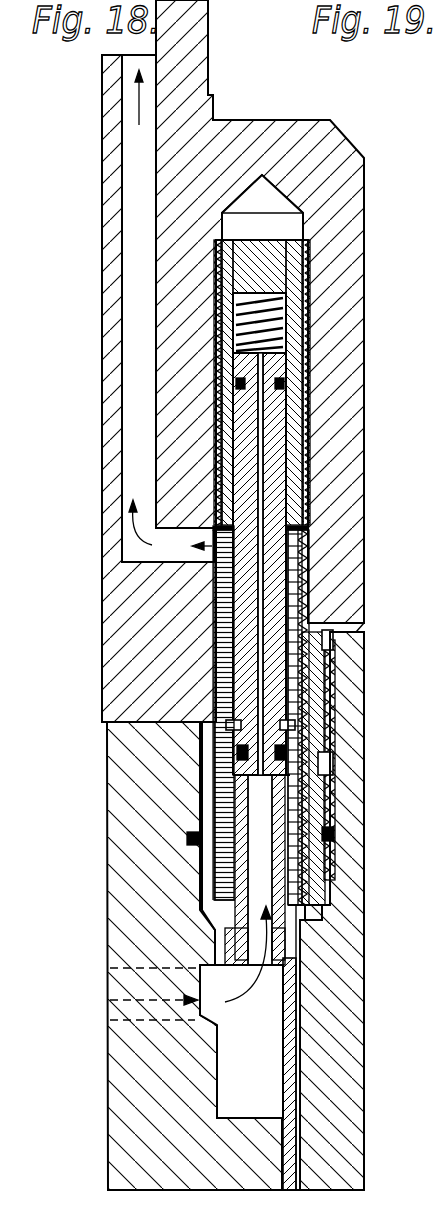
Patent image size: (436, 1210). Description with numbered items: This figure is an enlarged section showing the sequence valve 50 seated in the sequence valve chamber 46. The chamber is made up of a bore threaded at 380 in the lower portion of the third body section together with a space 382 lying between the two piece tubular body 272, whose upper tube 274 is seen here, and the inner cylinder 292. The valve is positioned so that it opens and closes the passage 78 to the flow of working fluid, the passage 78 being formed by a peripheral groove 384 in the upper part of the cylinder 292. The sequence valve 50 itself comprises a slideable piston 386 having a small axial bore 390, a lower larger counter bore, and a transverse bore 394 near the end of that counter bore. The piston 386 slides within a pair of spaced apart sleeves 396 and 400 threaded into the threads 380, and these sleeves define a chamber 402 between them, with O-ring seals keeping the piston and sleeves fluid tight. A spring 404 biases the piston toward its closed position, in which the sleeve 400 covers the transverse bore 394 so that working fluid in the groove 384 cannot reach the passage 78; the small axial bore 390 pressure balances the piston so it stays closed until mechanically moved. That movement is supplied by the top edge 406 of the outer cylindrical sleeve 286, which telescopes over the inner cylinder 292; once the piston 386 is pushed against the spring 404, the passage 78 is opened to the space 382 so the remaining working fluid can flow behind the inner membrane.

In FIG. 18, the sequence valve 50 is at (372, 452).
In FIG. 18, the passage 78 is at (140, 250).
In FIG. 19, the passage 78 is at (435, 247).
In FIG. 18, the sequence valve chamber 46 is at (300, 562).
In FIG. 18, the spring 404 is at (283, 337).
In FIG. 18, the sleeve 396 is at (300, 388).
In FIG. 18, the slideable piston 386 is at (283, 704).
In FIG. 18, the small axial bore 390 is at (261, 723).
In FIG. 18, the threads 380 is at (296, 592).
In FIG. 18, the chamber 402 is at (301, 667).
In FIG. 18, the transverse bore 394 is at (281, 792).
In FIG. 18, the sleeve 400 is at (298, 824).
In FIG. 18, the space 382 is at (313, 903).
In FIG. 18, the top edge of the sleeve 406 is at (288, 950).
In FIG. 18, the peripheral groove 384 is at (108, 977).
In FIG. 19, the peripheral groove 384 is at (435, 992).
In FIG. 18, the upper tube 274 is at (355, 1037).
In FIG. 18, the outer cylindrical sleeve 286 is at (290, 1080).
In FIG. 18, the inner cylinder 292 is at (130, 1108).
In FIG. 19, the inner cylinder 292 is at (435, 1114).
In FIG. 18, the two piece tubular body 272 is at (366, 1152).